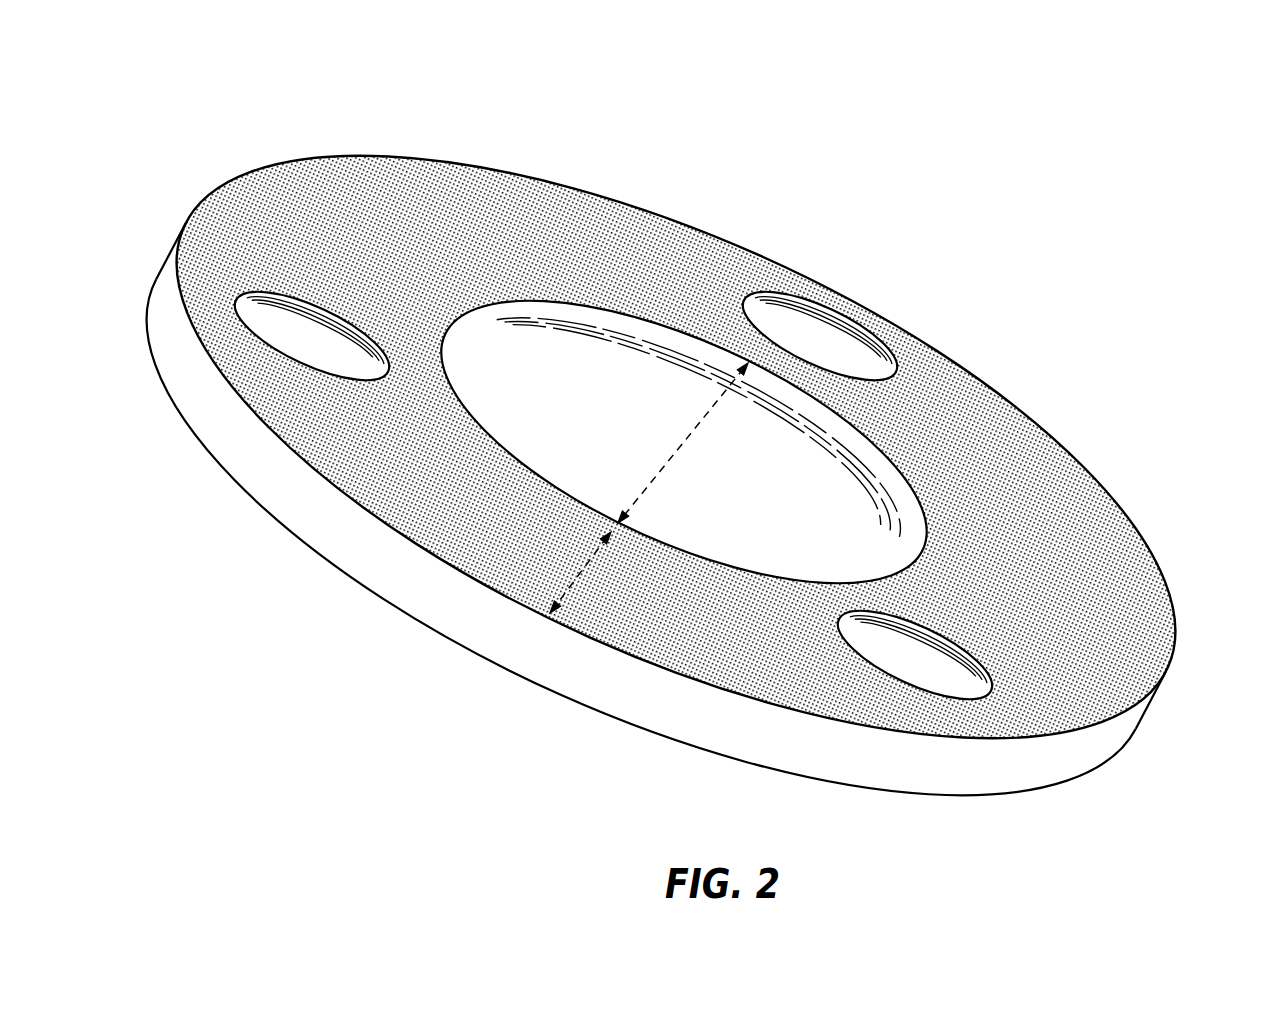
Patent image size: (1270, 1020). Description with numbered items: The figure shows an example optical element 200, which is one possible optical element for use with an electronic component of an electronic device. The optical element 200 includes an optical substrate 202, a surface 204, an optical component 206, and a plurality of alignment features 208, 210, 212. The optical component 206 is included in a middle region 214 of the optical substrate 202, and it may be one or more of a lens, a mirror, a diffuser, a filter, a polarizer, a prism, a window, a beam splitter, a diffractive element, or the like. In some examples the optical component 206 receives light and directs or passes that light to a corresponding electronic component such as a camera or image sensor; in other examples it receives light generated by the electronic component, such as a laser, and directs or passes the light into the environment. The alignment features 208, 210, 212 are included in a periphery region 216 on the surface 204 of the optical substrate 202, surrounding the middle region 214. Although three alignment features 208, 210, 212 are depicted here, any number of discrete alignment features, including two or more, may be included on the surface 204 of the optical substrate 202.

The optical element 200 is at (676, 440).
The optical substrate 202 is at (1128, 735).
The surface 204 is at (1051, 585).
The optical component 206 is at (860, 473).
The alignment feature 208 is at (322, 330).
The alignment feature 210 is at (882, 350).
The alignment feature 212 is at (865, 649).
The middle region 214 is at (713, 404).
The periphery region 216 is at (584, 566).